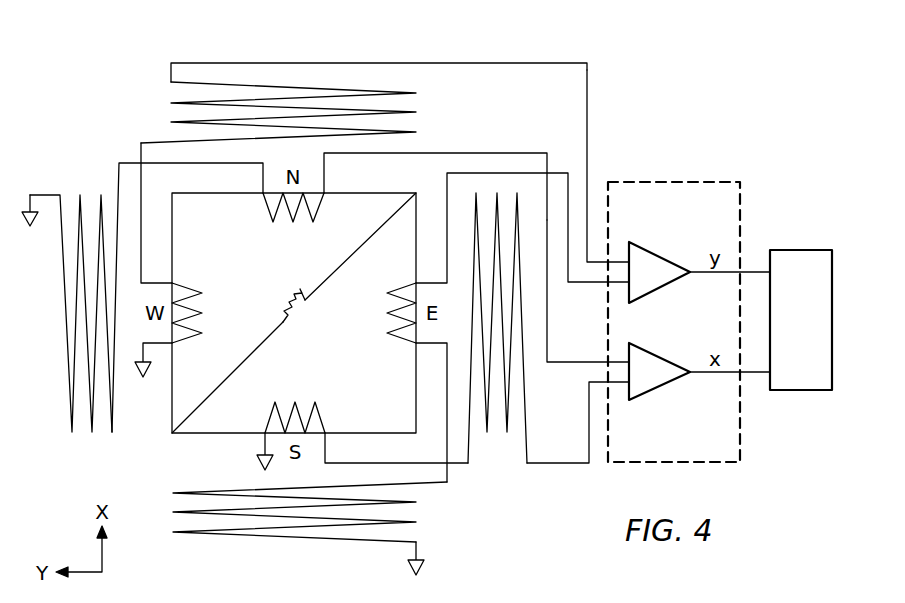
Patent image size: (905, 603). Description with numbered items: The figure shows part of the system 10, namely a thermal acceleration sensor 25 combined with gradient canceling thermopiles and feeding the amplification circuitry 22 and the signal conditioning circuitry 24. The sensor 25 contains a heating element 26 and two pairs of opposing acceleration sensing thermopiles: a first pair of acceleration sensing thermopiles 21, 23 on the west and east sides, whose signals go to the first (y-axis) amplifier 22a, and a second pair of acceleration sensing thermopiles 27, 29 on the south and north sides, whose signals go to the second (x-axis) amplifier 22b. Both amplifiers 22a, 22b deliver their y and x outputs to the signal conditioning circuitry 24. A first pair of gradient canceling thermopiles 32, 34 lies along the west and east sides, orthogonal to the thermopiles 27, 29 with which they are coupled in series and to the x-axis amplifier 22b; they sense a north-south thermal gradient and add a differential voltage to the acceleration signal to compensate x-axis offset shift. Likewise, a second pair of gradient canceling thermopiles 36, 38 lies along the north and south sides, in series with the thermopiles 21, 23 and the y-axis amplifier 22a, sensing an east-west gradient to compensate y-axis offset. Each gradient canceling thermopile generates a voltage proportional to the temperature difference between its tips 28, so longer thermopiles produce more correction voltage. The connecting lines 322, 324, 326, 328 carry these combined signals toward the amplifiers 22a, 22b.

The system 10 is at (698, 52).
The acceleration sensing thermopile 21 is at (185, 287).
The amplification circuitry 22 is at (696, 174).
The first (y-axis) amplifier 22a is at (662, 290).
The second (x-axis) amplifier 22b is at (662, 390).
The acceleration sensing thermopile 23 is at (401, 340).
The signal conditioning circuitry 24 is at (812, 333).
The thermal acceleration sensor 25 is at (213, 436).
The heating element 26 is at (262, 347).
The acceleration sensing thermopile 27 is at (322, 417).
The tips 28 is at (160, 106).
The acceleration sensing thermopile 29 is at (320, 208).
The gradient canceling thermopile 32 is at (90, 412).
The gradient canceling thermopile 34 is at (488, 412).
The gradient canceling thermopile 36 is at (278, 63).
The gradient canceling thermopile 38 is at (278, 537).
The coil feed line 322 is at (588, 112).
The north bridge output line 324 is at (505, 152).
The x amplifier input line 326 is at (568, 366).
The south bridge output line 328 is at (560, 465).